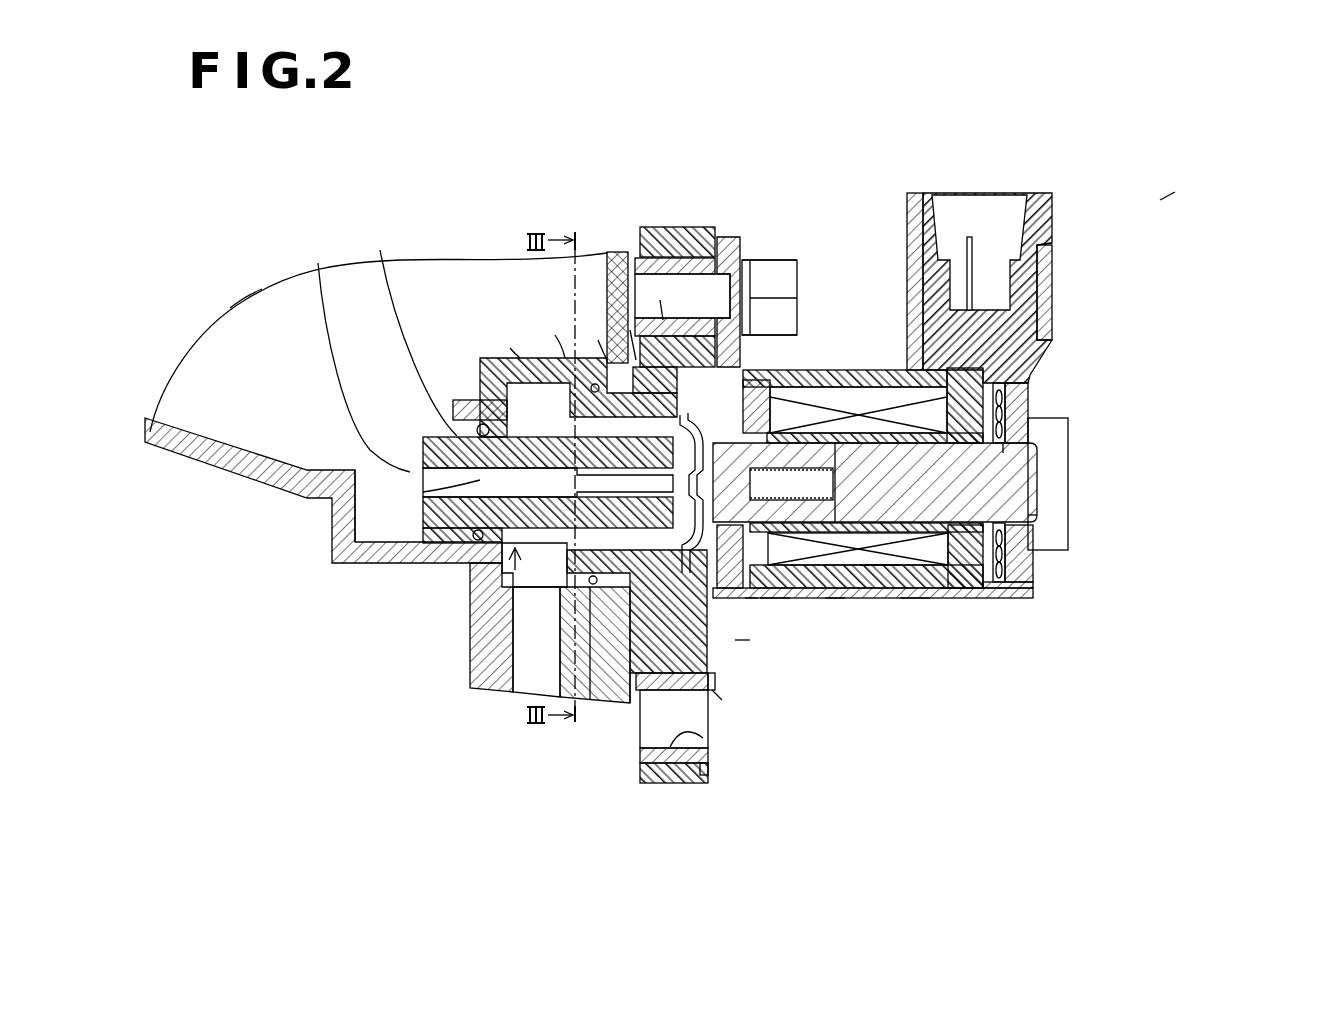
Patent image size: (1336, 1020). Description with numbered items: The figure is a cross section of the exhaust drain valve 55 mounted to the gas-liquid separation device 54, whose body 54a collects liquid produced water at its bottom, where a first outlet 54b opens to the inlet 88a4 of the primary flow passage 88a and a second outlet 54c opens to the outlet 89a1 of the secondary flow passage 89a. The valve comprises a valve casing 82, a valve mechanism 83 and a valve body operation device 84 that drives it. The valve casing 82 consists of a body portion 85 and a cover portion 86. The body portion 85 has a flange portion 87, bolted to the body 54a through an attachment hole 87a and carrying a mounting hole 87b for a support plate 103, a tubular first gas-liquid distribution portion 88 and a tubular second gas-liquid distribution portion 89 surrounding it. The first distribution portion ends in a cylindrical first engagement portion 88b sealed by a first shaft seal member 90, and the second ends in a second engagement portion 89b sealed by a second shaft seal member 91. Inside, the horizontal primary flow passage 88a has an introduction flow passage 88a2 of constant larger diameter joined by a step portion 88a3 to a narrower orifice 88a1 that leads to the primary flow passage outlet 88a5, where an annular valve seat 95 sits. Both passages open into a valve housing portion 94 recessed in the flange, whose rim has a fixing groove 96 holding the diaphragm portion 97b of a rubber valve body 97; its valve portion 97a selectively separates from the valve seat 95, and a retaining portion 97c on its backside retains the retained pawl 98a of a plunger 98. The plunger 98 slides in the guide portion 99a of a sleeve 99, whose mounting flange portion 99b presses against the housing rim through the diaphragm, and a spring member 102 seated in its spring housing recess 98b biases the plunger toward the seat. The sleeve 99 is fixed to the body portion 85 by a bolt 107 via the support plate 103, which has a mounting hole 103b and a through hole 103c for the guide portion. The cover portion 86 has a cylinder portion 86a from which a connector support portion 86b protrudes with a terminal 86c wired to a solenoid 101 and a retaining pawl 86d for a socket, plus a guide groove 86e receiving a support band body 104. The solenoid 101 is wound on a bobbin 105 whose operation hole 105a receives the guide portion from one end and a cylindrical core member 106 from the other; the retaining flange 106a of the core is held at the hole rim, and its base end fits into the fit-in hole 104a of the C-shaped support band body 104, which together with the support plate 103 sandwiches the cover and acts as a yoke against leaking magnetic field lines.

The gas-liquid separation device 54 is at (268, 278).
The body 54a is at (245, 308).
The first outlet 54b is at (380, 515).
The second outlet 54c is at (530, 660).
The exhaust drain valve 55 is at (1176, 190).
The valve casing 82 is at (820, 776).
The valve mechanism 83 is at (748, 430).
The valve body operation device 84 is at (912, 605).
The body portion 85 is at (743, 640).
The cover portion 86 is at (770, 598).
The cylinder portion 86a is at (933, 598).
The connector support portion 86b is at (1043, 300).
The terminal 86c is at (957, 268).
The retaining pawl 86d is at (1053, 240).
The guide groove 86e is at (1017, 390).
The flange portion 87 is at (654, 783).
The attachment hole 87a is at (706, 770).
The mounting hole 87b is at (687, 280).
The first gas-liquid distribution portion 88 is at (490, 567).
The primary flow passage 88a is at (423, 473).
The orifice 88a1 is at (480, 358).
The introduction flow passage 88a2 is at (423, 492).
The step portion 88a3 is at (405, 327).
The inlet 88a4 is at (351, 354).
The primary flow passage outlet 88a5 is at (607, 360).
The first engagement portion 88b is at (452, 530).
The second gas-liquid distribution portion 89 is at (617, 567).
The secondary flow passage 89a is at (612, 330).
The outlet 89a1 is at (520, 358).
The second engagement portion 89b is at (565, 358).
The first shaft seal member 90 is at (476, 545).
The second shaft seal member 91 is at (590, 690).
The valve housing portion 94 is at (645, 620).
The valve seat 95 is at (712, 690).
The fixing groove 96 is at (752, 598).
The valve body 97 is at (666, 178).
The valve portion 97a is at (636, 360).
The diaphragm portion 97b is at (663, 320).
The retaining portion 97c is at (722, 700).
The plunger 98 is at (795, 468).
The retained pawl 98a is at (886, 585).
The spring housing recess 98b is at (812, 437).
The sleeve 99 is at (864, 697).
The guide portion 99a is at (835, 598).
The mounting flange portion 99b is at (782, 598).
The solenoid 101 is at (957, 598).
The spring member 102 is at (832, 440).
The support plate 103 is at (740, 280).
The mounting hole 103b is at (745, 260).
The through hole 103c is at (775, 440).
The support band body 104 is at (1022, 572).
The fit-in hole 104a is at (1022, 515).
The bobbin 105 is at (883, 450).
The operation hole 105a is at (963, 457).
The core member 106 is at (962, 582).
The retaining flange 106a is at (1002, 397).
The bolt 107 is at (752, 298).